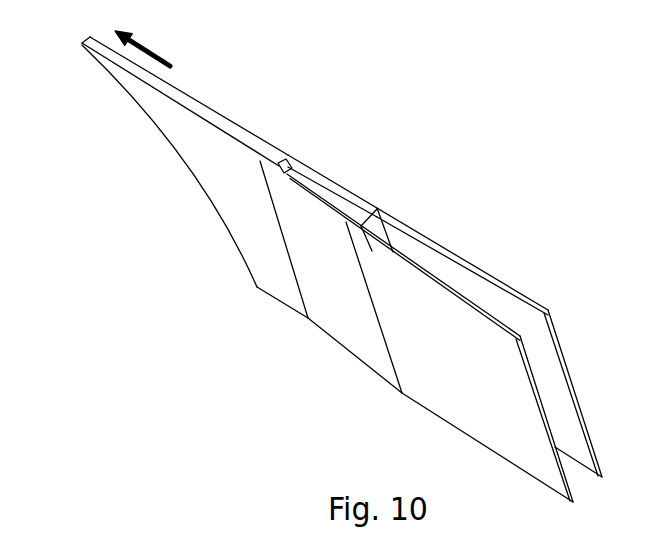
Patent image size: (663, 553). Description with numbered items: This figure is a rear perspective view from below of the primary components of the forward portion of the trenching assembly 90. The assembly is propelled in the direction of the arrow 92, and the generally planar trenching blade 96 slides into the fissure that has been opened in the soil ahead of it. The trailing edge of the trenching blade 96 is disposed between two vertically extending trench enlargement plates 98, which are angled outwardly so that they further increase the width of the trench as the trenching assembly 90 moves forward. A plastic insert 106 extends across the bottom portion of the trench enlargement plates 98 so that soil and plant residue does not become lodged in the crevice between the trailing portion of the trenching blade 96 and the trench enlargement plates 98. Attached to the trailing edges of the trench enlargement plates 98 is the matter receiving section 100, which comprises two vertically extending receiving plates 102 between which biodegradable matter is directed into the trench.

The trenching assembly 90 is at (490, 109).
The arrow 92 is at (161, 49).
The trenching blade 96 is at (192, 142).
The trench enlargement plates 98 is at (336, 179).
The matter receiving section 100 is at (517, 243).
The receiving plates 102 is at (432, 253).
The plastic insert 106 is at (340, 205).